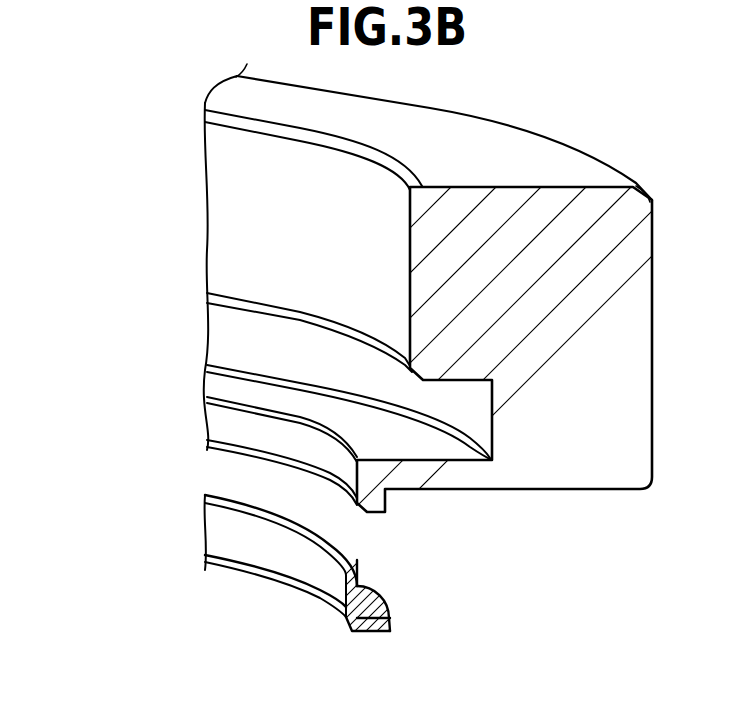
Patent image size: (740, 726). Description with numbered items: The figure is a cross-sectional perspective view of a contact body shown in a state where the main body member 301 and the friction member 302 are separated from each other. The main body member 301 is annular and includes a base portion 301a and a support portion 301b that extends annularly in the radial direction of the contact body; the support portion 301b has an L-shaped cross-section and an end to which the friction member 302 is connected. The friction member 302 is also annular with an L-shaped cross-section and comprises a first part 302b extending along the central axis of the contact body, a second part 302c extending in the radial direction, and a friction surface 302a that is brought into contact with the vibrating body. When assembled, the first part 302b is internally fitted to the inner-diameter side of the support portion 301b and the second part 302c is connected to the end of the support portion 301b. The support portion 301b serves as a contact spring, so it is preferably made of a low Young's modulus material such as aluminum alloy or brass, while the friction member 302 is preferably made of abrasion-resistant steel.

The main body member 301 is at (118, 256).
The base portion 301a is at (463, 253).
The support portion 301b is at (378, 473).
The friction member 302 is at (352, 625).
The friction surface 302a is at (377, 633).
The first part 302b is at (359, 583).
The second part 302c is at (384, 603).